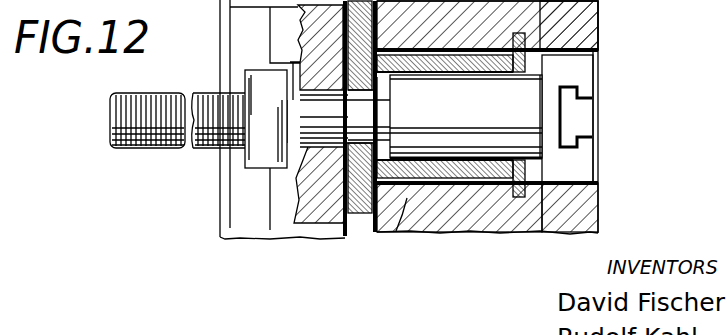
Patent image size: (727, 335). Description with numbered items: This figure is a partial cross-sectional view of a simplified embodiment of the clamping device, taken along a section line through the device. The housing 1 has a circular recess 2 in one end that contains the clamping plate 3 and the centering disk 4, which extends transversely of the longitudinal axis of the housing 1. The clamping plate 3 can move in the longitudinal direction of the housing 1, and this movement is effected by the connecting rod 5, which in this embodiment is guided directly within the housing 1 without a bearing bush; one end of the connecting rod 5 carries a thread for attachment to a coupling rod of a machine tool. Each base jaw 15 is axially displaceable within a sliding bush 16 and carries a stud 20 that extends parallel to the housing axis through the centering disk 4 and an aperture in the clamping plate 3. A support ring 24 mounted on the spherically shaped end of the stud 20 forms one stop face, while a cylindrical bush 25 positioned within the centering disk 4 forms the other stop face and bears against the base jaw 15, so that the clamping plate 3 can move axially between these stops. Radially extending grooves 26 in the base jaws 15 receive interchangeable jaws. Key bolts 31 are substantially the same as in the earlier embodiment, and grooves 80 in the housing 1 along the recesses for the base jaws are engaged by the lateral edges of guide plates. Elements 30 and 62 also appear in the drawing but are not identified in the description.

The housing 1 is at (452, 218).
The circular recess 2 is at (242, 31).
The clamping plate 3 is at (282, 218).
The centering disk 4 is at (360, 210).
The connecting rod 5 is at (200, 92).
The base jaws 15 is at (580, 72).
The sliding bushes 16 is at (413, 217).
The stud 20 is at (322, 90).
The support ring 24 is at (250, 148).
The cylindrical bush 25 is at (303, 147).
The radially extending grooves 26 is at (562, 145).
The upper pin 30 is at (518, 26).
The key bolts 31 is at (580, 190).
The piston 62 is at (481, 123).
The grooves 80 is at (522, 197).